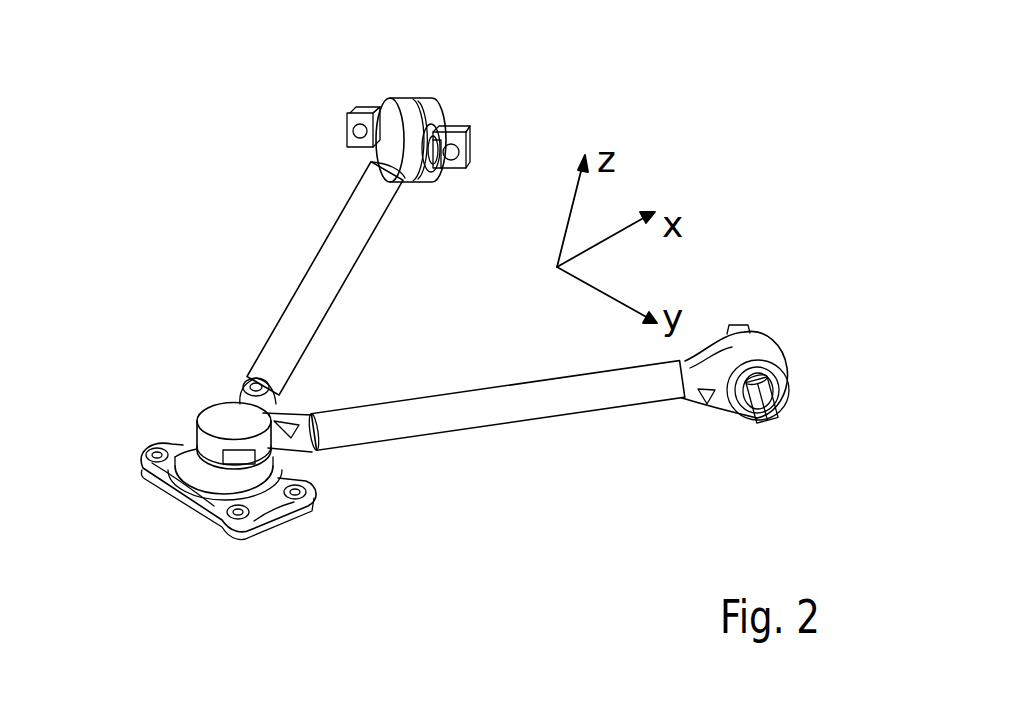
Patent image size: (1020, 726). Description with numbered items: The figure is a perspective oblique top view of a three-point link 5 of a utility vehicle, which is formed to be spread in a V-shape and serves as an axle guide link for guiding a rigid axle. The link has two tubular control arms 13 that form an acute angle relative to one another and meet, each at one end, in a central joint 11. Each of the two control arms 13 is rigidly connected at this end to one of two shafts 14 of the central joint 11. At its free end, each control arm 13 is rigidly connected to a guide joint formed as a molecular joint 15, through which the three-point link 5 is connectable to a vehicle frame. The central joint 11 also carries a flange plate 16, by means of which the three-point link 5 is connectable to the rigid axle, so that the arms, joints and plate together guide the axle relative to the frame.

The three-point link 5 is at (457, 322).
The central joint 11 is at (184, 392).
The tubular control arms 13 is at (340, 251).
The shafts of the central joint 14 is at (248, 380).
The molecular joint 15 is at (458, 110).
The flange plate 16 is at (270, 512).